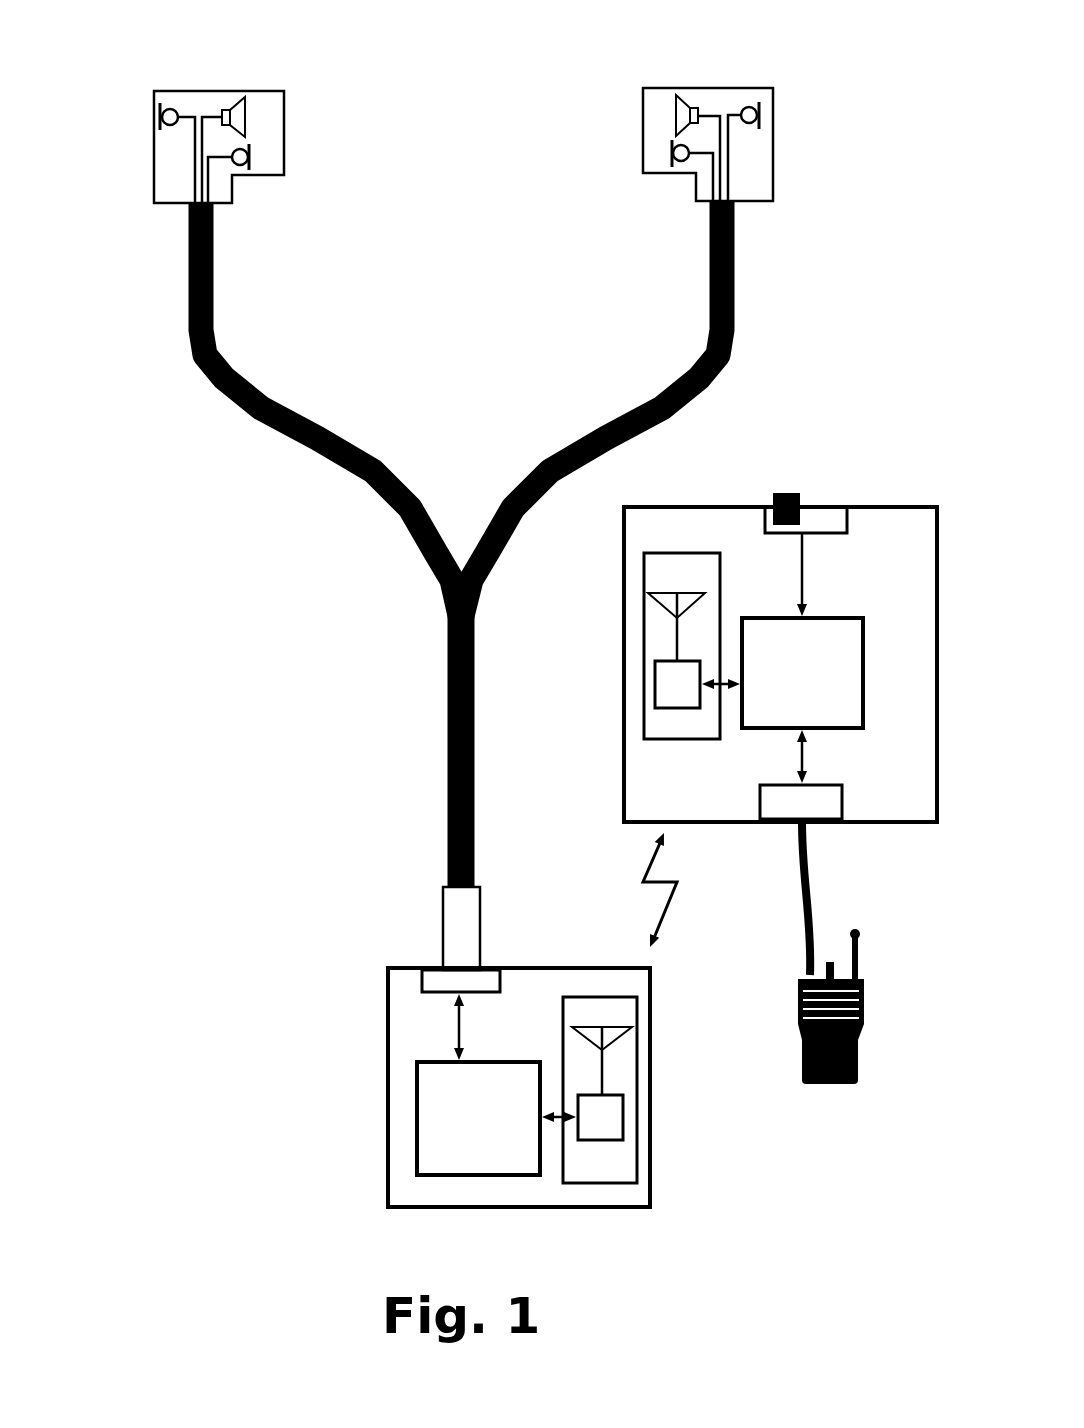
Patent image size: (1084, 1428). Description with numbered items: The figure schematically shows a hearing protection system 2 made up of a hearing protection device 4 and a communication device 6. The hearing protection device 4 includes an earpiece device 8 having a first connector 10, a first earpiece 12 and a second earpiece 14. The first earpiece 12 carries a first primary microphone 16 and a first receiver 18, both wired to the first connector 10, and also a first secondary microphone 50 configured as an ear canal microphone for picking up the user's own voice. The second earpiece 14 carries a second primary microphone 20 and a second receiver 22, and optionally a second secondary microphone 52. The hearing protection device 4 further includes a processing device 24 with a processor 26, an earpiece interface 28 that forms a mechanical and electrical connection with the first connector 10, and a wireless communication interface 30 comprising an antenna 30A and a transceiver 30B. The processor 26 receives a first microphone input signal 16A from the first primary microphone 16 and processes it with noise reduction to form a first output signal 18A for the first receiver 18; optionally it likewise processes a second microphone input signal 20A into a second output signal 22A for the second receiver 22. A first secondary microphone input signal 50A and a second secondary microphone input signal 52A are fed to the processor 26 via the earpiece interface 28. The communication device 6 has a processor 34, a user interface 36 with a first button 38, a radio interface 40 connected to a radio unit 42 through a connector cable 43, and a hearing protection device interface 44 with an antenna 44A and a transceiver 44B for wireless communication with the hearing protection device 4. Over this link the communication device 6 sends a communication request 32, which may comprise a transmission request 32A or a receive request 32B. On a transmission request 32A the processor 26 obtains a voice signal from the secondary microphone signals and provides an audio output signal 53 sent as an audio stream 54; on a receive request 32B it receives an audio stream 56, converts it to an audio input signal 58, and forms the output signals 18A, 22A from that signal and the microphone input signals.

The hearing protection system 2 is at (100, 108).
The hearing protection device 4 is at (212, 630).
The communication device 6 is at (878, 507).
The earpiece device 8 is at (240, 508).
The first connector 10 is at (480, 930).
The first earpiece 12 is at (157, 203).
The second earpiece 14 is at (773, 192).
The first primary microphone 16 is at (170, 108).
The first microphone input signal 16A is at (195, 150).
The first receiver 18 is at (242, 97).
The first output signal 18A is at (218, 113).
The second primary microphone 20 is at (757, 105).
The second microphone input signal 20A is at (733, 157).
The second receiver 22 is at (686, 103).
The second output signal 22A is at (703, 115).
The processing device 24 is at (453, 1019).
The processor 26 is at (422, 1127).
The earpiece interface 28 is at (437, 975).
The wireless communication interface 30 is at (620, 1183).
The antenna 30A is at (617, 1032).
The transceiver 30B is at (625, 1108).
The communication request 32 is at (598, 882).
The transmission request 32A is at (598, 882).
The receive request 32B is at (598, 882).
The processor 34 is at (853, 618).
The user interface 36 is at (767, 523).
The first button 38 is at (783, 493).
The radio interface 40 is at (840, 795).
The radio unit 42 is at (827, 1086).
The connector cable 43 is at (798, 904).
The hearing protection device interface 44 is at (703, 553).
The device antenna 44A is at (657, 607).
The device radio module 44B is at (653, 693).
The first secondary microphone 50 is at (249, 150).
The first secondary microphone input signal 50A is at (208, 187).
The second secondary microphone 52 is at (676, 160).
The second secondary microphone input signal 52A is at (707, 187).
The audio output signal 53 is at (531, 1200).
The audio stream 54 is at (598, 882).
The audio stream 56 is at (663, 900).
The audio input signal 58 is at (558, 1118).